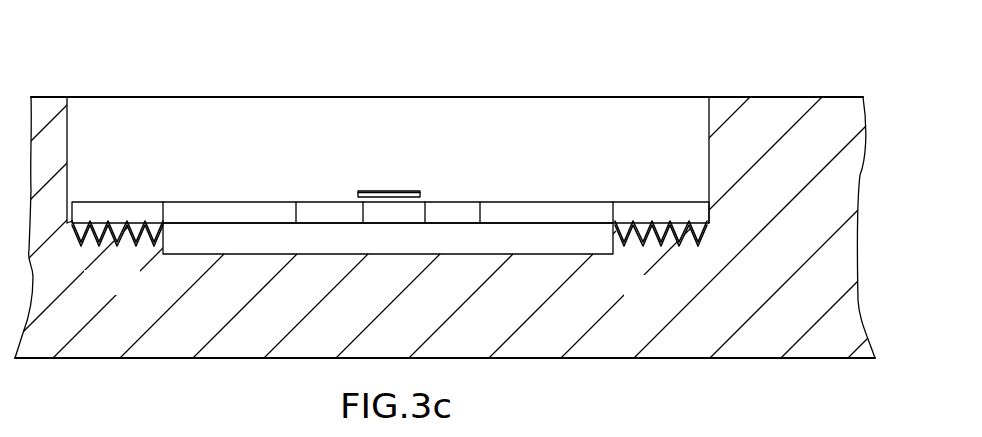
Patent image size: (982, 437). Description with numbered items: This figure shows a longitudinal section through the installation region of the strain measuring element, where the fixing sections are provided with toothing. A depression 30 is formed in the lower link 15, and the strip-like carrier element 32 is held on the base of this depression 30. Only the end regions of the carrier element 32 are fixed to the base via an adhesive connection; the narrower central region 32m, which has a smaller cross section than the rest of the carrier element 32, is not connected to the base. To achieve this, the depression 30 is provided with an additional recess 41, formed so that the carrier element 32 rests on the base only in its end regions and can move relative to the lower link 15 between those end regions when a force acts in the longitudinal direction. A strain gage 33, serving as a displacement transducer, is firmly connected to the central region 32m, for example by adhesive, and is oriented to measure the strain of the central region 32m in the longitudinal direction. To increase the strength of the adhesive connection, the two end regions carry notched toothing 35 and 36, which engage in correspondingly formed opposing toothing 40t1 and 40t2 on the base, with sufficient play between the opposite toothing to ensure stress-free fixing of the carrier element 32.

The lower link 15 is at (793, 113).
The depression 30 is at (682, 145).
The carrier element 32 is at (251, 202).
The central region 32m is at (410, 210).
The strain gage 33 is at (383, 190).
The toothing 35 is at (112, 222).
The toothing 36 is at (640, 220).
The opposing toothing 40t1 is at (114, 234).
The opposing toothing 40t2 is at (660, 238).
The additional recess 41 is at (423, 240).